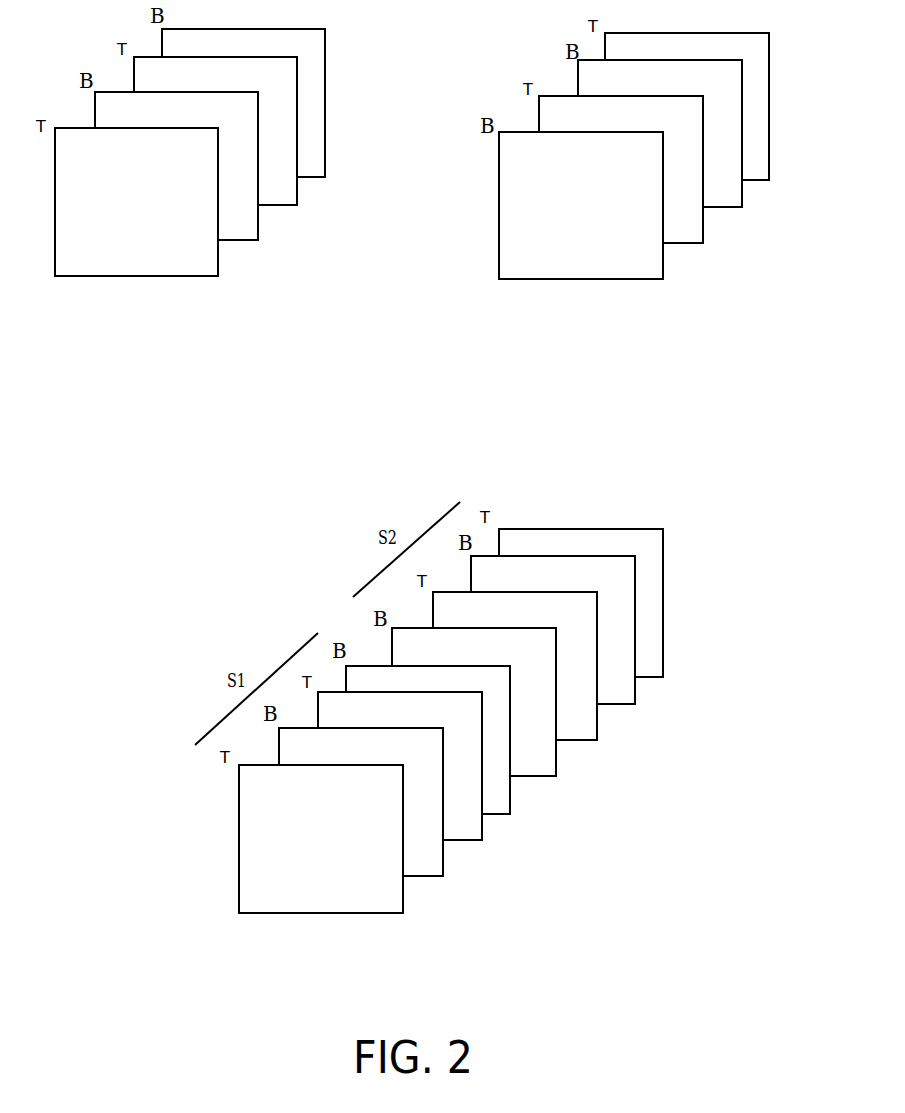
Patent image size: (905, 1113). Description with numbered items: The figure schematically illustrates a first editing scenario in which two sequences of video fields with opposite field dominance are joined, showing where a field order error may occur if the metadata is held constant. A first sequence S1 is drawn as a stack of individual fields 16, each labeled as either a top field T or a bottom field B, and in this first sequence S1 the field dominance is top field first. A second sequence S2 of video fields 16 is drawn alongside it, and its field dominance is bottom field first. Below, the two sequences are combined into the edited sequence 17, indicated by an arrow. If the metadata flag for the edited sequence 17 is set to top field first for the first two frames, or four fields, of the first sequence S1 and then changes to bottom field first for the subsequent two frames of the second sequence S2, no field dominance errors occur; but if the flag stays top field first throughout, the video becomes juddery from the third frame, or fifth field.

The video field 16 is at (447, 172).
The edited sequence 17 is at (590, 764).
The first sequence of video fields S1 is at (190, 172).
The second sequence of video fields S2 is at (634, 172).